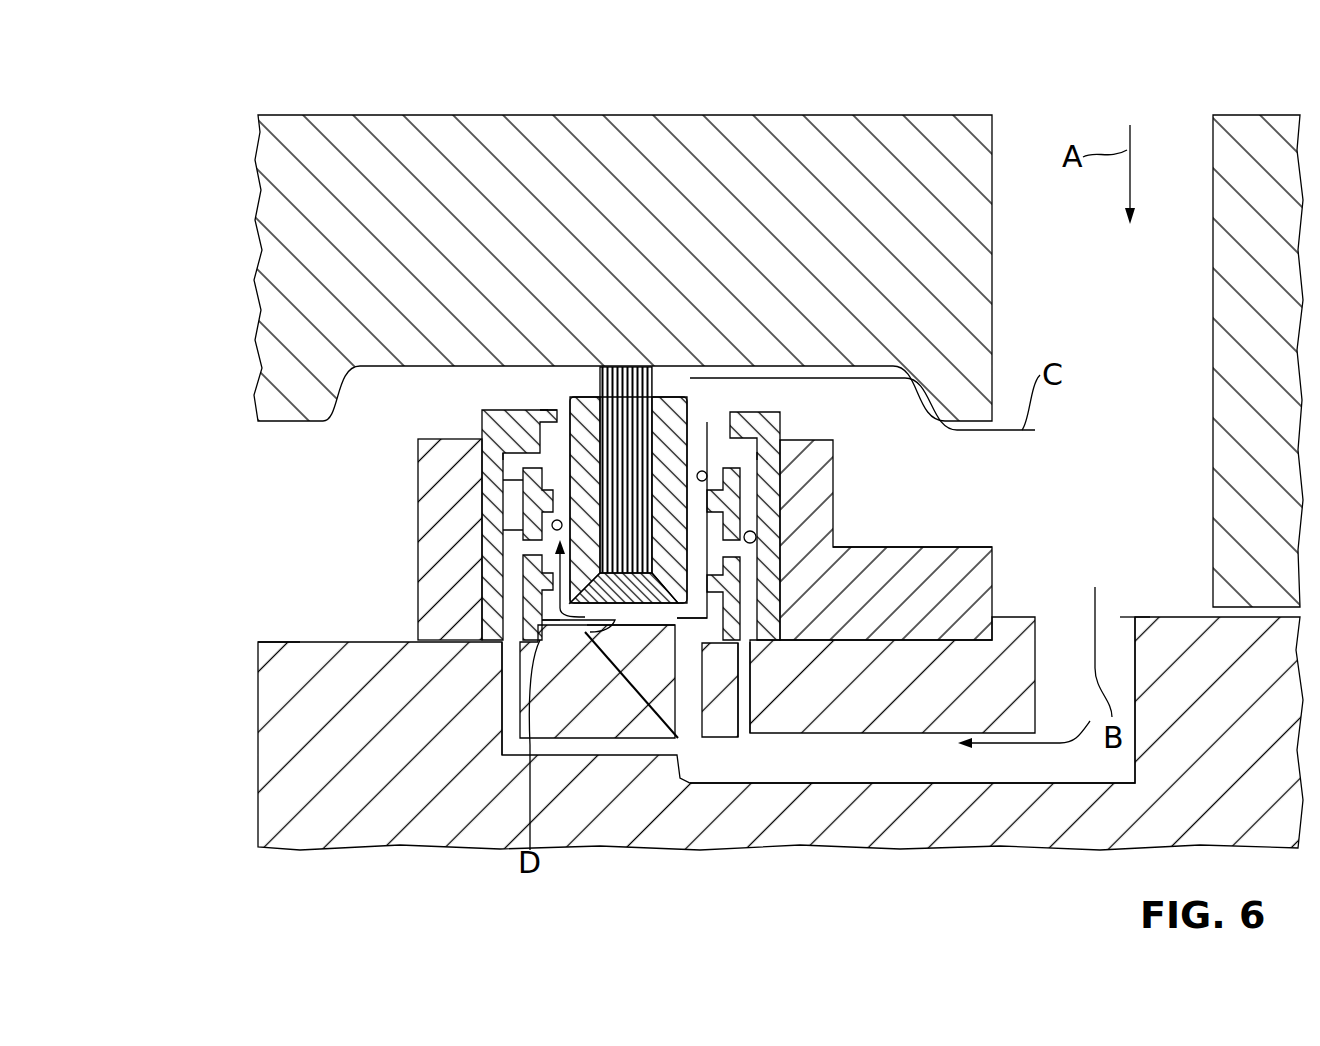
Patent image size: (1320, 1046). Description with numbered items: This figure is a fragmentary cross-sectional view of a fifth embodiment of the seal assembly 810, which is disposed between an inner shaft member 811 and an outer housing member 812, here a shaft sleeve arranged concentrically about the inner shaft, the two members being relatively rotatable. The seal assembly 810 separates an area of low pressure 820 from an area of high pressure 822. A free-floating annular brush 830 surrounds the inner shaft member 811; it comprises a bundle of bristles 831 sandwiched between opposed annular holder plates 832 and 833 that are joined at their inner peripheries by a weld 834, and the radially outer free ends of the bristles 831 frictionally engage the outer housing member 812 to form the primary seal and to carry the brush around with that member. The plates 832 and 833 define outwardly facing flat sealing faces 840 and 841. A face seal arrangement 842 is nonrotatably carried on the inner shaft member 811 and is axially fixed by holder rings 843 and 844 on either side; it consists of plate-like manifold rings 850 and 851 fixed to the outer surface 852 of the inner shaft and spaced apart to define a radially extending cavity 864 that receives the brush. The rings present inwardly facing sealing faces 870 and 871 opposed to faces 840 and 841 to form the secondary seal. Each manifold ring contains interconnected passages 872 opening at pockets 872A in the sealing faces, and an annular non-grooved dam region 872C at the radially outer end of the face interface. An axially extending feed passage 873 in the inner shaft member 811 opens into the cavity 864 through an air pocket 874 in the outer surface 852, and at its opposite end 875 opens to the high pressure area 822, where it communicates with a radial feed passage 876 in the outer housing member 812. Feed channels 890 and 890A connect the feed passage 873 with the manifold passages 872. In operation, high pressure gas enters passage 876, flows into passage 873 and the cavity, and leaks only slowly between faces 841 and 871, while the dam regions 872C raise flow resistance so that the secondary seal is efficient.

The seal assembly 810 is at (390, 566).
The inner shaft member 811 is at (873, 826).
The outer housing member 812 is at (322, 114).
The area of low pressure 820 is at (258, 495).
The area of high pressure 822 is at (1175, 552).
The annular brush 830 is at (661, 362).
The bristles 831 is at (600, 377).
The holder plate 832 is at (680, 512).
The holder plate 833 is at (575, 500).
The weld 834 is at (683, 640).
The sealing face 840 is at (760, 563).
The sealing face 841 is at (550, 410).
The face seal arrangement 842 is at (808, 425).
The holder ring 843 is at (962, 555).
The holder ring 844 is at (486, 570).
The manifold ring 850 is at (792, 413).
The manifold ring 851 is at (474, 415).
The outer surface 852 is at (282, 640).
The cavity 864 is at (556, 622).
The sealing face 870 is at (690, 485).
The sealing face 871 is at (560, 530).
The passages 872 is at (506, 576).
The pockets 872A is at (547, 410).
The dam region 872C is at (548, 410).
The feed passage 873 is at (963, 783).
The air pocket 874 is at (587, 632).
The end 875 is at (1135, 617).
The feed passage 876 is at (1213, 143).
The feed channel 890 is at (527, 645).
The feed channel 890A is at (745, 740).